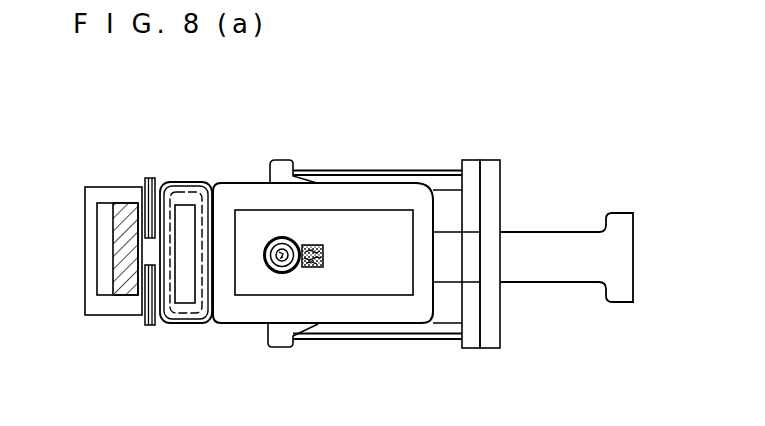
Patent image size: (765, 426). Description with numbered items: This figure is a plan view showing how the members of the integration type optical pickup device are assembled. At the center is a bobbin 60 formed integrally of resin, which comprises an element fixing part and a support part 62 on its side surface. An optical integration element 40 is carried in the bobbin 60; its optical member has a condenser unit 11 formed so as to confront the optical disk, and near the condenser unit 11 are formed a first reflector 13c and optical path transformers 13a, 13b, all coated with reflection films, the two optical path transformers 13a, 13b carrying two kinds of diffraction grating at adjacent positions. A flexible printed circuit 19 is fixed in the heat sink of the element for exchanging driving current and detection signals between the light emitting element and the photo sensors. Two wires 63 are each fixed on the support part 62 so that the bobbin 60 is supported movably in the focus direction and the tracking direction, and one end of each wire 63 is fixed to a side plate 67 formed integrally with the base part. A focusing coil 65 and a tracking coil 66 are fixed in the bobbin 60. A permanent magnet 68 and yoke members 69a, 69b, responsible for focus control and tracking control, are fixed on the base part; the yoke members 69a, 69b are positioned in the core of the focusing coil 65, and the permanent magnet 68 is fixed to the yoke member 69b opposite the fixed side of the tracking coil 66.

The condenser unit 11 is at (270, 239).
The optical path transformer 13a is at (357, 175).
The optical path transformer 13b is at (357, 175).
The first reflector 13c is at (316, 245).
The flexible printed circuit 19 is at (559, 240).
The optical integration element 40 is at (396, 220).
The bobbin 60 is at (434, 322).
The support part 62 is at (280, 160).
The wire 63 is at (371, 169).
The focusing coil 65 is at (190, 182).
The tracking coil 66 is at (151, 179).
The side plate 67 is at (493, 170).
The permanent magnet 68 is at (124, 204).
The yoke member 69a is at (178, 285).
The yoke member 69b is at (88, 316).